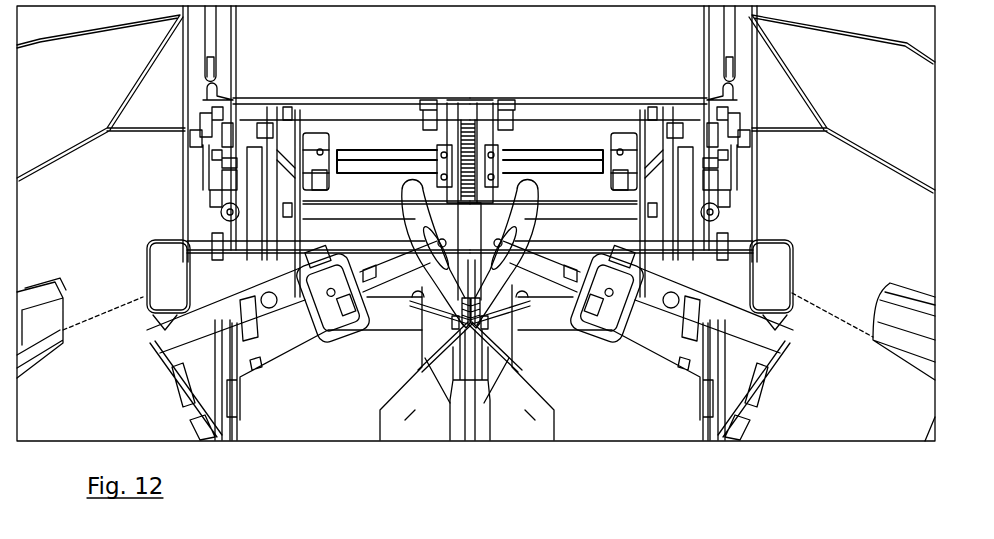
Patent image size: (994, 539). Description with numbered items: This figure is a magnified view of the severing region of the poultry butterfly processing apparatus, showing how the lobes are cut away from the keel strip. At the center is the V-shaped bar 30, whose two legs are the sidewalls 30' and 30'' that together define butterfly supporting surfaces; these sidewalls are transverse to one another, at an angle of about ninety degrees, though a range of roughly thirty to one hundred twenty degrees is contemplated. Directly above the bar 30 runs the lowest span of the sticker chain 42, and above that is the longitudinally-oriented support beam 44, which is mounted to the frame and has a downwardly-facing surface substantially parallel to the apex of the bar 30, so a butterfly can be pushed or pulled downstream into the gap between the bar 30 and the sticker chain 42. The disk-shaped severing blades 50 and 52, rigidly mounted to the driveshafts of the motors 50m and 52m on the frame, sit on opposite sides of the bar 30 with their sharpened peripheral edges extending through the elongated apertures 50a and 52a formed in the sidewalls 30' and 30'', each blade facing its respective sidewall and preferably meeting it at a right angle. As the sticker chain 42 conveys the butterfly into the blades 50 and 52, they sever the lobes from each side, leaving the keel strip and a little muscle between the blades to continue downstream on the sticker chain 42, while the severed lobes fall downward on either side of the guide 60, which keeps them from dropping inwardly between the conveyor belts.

The support beam 44 is at (463, 230).
The blade 50 is at (417, 203).
The blade 52 is at (526, 197).
The aperture 50a is at (450, 325).
The aperture 52a is at (490, 325).
The bar 30 is at (435, 326).
The sidewall 30' is at (425, 399).
The sidewall 30'' is at (508, 399).
The sticker chain 42 is at (468, 330).
The guide 60 is at (560, 413).
The motor 50m is at (114, 411).
The motor 52m is at (853, 418).